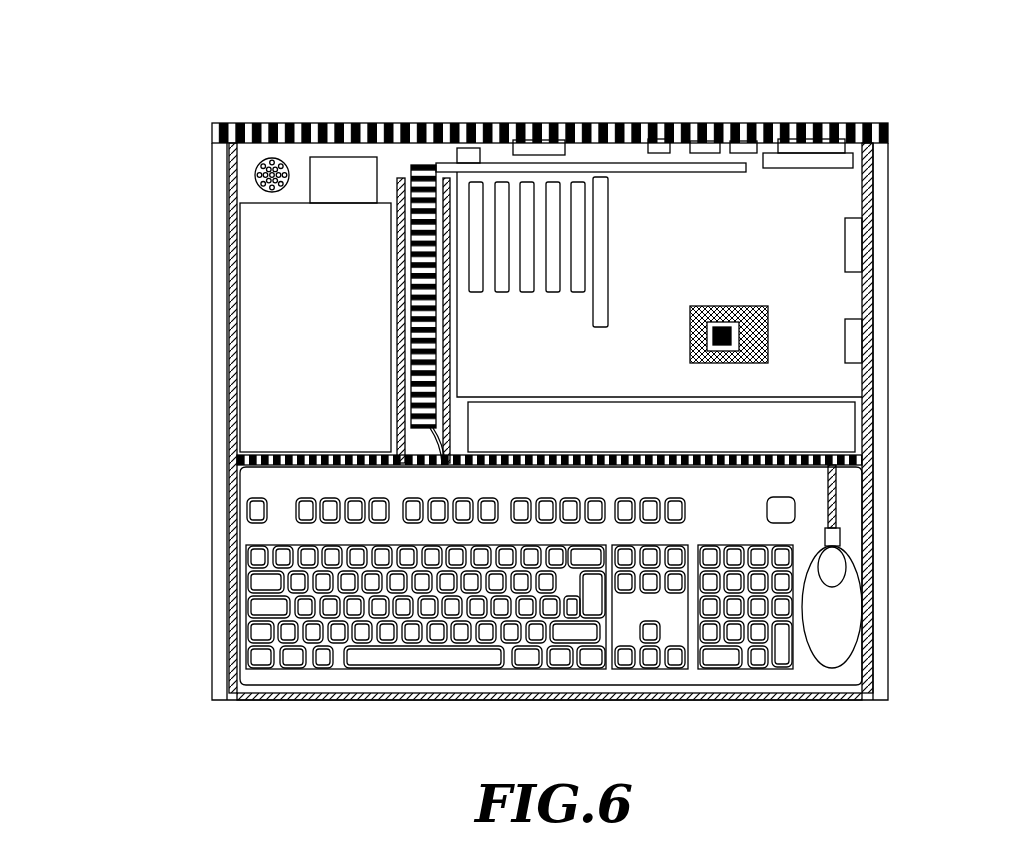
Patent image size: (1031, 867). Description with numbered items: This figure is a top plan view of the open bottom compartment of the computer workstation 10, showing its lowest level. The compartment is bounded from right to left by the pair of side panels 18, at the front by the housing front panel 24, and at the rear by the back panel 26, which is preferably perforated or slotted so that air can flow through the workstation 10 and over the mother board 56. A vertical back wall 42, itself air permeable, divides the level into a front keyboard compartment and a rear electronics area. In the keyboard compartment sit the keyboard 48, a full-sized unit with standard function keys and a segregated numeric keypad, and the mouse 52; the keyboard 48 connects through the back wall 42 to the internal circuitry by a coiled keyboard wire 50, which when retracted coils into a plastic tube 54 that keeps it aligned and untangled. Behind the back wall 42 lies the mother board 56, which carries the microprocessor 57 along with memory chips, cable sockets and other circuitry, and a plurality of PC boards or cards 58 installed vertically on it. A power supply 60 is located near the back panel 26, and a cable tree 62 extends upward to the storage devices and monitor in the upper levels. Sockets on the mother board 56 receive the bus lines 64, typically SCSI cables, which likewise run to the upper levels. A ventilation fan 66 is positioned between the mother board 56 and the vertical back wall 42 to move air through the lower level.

The computer workstation 10 is at (935, 105).
The side panels 18 is at (880, 505).
The housing front panel 24 is at (488, 700).
The back panel 26 is at (288, 122).
The vertical back wall 42 is at (268, 452).
The keyboard 48 is at (399, 606).
The keyboard wire 50 is at (427, 165).
The mouse 52 is at (840, 627).
The plastic tube 54 is at (393, 196).
The mother board 56 is at (684, 190).
The microprocessor 57 is at (735, 333).
The PC boards or cards 58 is at (595, 183).
The power supply 60 is at (288, 340).
The cable tree 62 is at (256, 183).
The bus lines 64 is at (808, 160).
The ventilation fan 66 is at (835, 427).